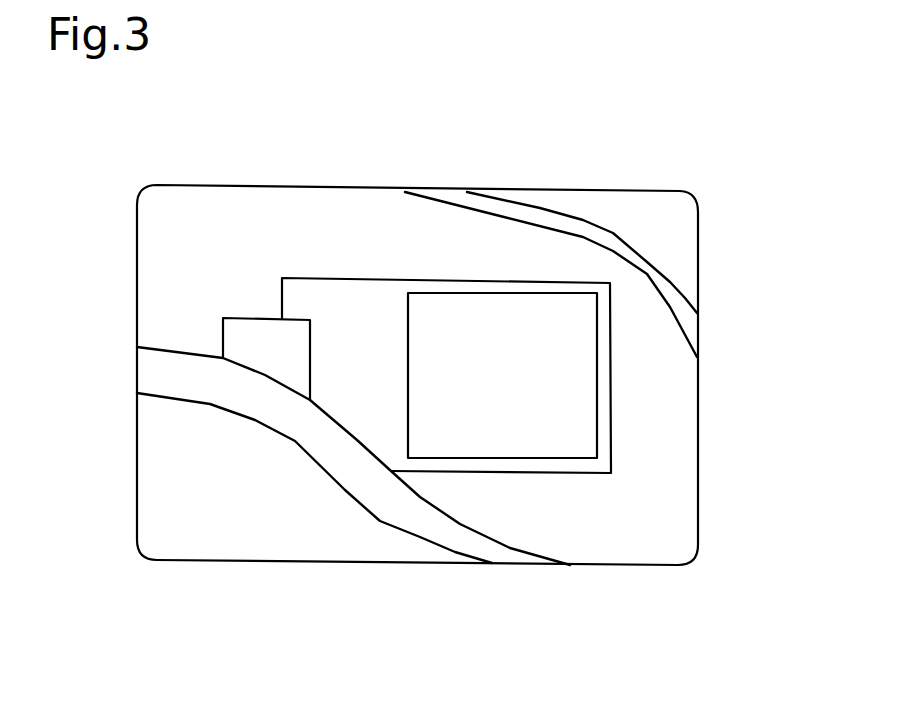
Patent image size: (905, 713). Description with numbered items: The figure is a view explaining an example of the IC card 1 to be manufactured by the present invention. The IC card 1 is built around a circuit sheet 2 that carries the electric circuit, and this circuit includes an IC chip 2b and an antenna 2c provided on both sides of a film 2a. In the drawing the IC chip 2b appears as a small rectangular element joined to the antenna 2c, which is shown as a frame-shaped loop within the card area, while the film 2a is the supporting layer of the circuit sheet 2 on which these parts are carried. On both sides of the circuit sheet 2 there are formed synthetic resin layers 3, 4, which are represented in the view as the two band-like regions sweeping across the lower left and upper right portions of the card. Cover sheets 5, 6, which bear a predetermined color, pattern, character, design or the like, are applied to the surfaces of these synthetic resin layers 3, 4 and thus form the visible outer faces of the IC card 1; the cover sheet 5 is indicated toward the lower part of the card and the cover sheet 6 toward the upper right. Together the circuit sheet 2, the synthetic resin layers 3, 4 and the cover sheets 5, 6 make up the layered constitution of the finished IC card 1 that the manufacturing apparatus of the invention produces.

The IC card 1 is at (714, 207).
The circuit sheet 2 is at (489, 228).
The film 2a is at (192, 208).
The IC chip 2b is at (243, 332).
The antenna 2c is at (427, 285).
The synthetic resin layer 3 is at (377, 500).
The synthetic resin layer 4 is at (585, 223).
The cover sheet 5 is at (268, 552).
The cover sheet 6 is at (642, 222).